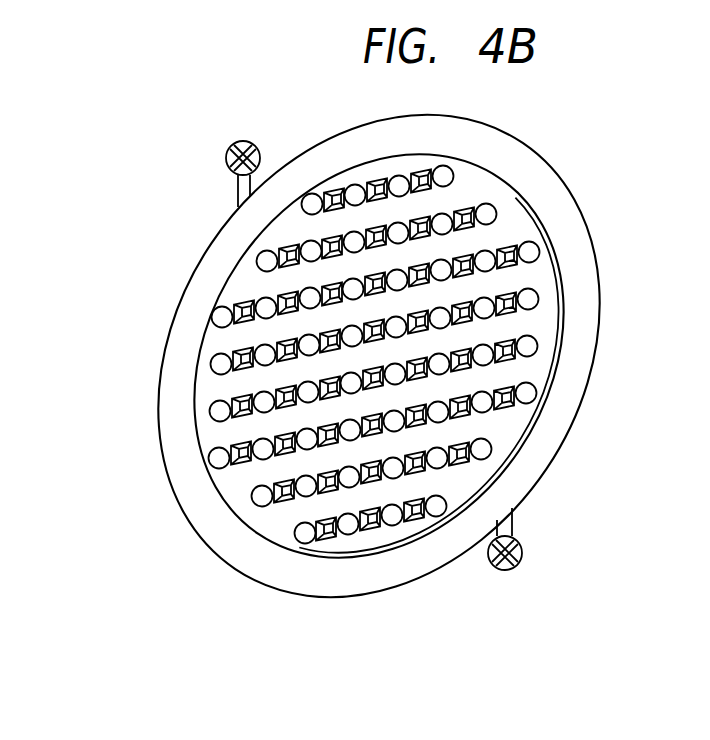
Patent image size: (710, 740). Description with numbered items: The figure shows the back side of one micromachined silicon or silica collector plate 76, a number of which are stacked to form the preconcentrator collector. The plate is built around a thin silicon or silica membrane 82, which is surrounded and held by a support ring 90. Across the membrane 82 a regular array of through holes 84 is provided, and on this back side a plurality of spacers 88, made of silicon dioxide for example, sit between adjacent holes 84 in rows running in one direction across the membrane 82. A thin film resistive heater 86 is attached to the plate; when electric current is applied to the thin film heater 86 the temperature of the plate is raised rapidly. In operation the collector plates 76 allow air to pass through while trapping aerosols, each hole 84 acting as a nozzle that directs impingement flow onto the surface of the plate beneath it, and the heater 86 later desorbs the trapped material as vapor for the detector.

The collector plate 76 is at (588, 175).
The membrane 82 is at (275, 523).
The through holes 84 is at (219, 463).
The thin film heater 86 is at (227, 168).
The spacers 88 is at (508, 322).
The support ring 90 is at (551, 425).